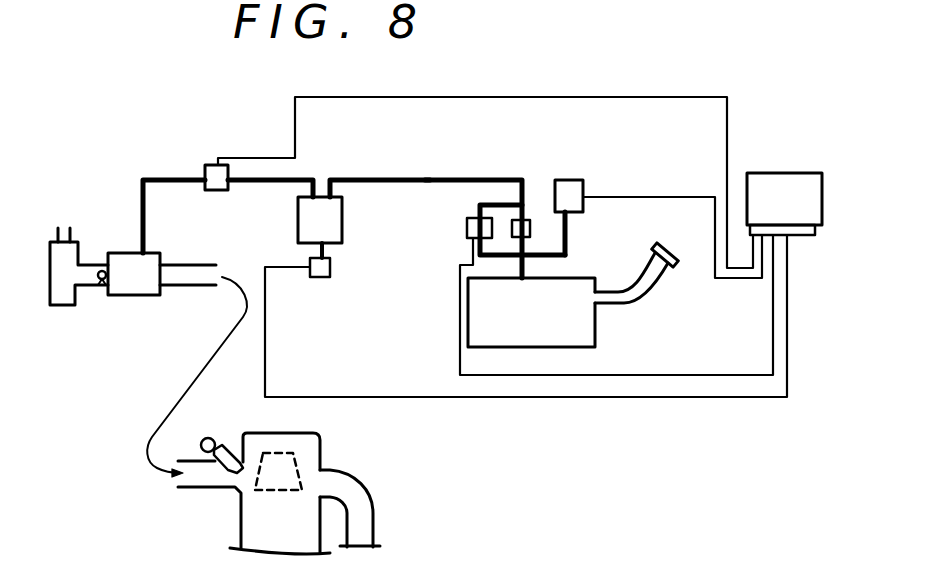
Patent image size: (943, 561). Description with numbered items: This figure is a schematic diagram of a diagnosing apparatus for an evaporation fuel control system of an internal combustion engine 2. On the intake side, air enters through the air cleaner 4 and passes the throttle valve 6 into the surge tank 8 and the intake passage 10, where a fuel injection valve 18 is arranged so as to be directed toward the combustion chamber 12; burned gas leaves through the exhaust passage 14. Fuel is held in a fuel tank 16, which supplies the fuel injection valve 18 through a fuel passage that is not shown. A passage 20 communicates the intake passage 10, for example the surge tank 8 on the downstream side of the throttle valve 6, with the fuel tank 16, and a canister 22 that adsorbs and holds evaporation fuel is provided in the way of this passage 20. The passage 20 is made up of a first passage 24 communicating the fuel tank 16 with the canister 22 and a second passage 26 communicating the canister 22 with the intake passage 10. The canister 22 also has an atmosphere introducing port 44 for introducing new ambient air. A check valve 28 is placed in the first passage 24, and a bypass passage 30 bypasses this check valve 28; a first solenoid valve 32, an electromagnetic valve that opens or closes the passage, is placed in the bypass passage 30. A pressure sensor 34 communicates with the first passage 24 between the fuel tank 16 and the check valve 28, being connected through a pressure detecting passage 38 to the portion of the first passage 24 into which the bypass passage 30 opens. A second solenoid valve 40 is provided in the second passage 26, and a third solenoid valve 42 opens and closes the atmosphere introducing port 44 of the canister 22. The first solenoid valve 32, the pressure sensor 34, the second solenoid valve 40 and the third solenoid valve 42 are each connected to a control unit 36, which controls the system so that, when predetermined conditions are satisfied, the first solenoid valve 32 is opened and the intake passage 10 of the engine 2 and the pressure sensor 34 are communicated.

The internal combustion engine 2 is at (303, 471).
The air cleaner 4 is at (62, 300).
The throttle valve 6 is at (97, 282).
The surge tank 8 is at (145, 290).
The intake passage 10 is at (198, 277).
The combustion chamber 12 is at (270, 478).
The exhaust passage 14 is at (363, 517).
The fuel tank 16 is at (593, 332).
The fuel injection valve 18 is at (228, 447).
The passage 20 is at (394, 180).
The canister 22 is at (333, 228).
The first passage 24 is at (463, 180).
The second passage 26 is at (138, 193).
The check valve 28 is at (530, 230).
The bypass passage 30 is at (507, 200).
The first solenoid valve 32 is at (473, 229).
The pressure sensor 34 is at (572, 190).
The control unit 36 is at (788, 192).
The pressure detecting passage 38 is at (567, 247).
The second solenoid valve 40 is at (210, 170).
The third solenoid valve 42 is at (323, 277).
The atmosphere introducing port 44 is at (328, 250).